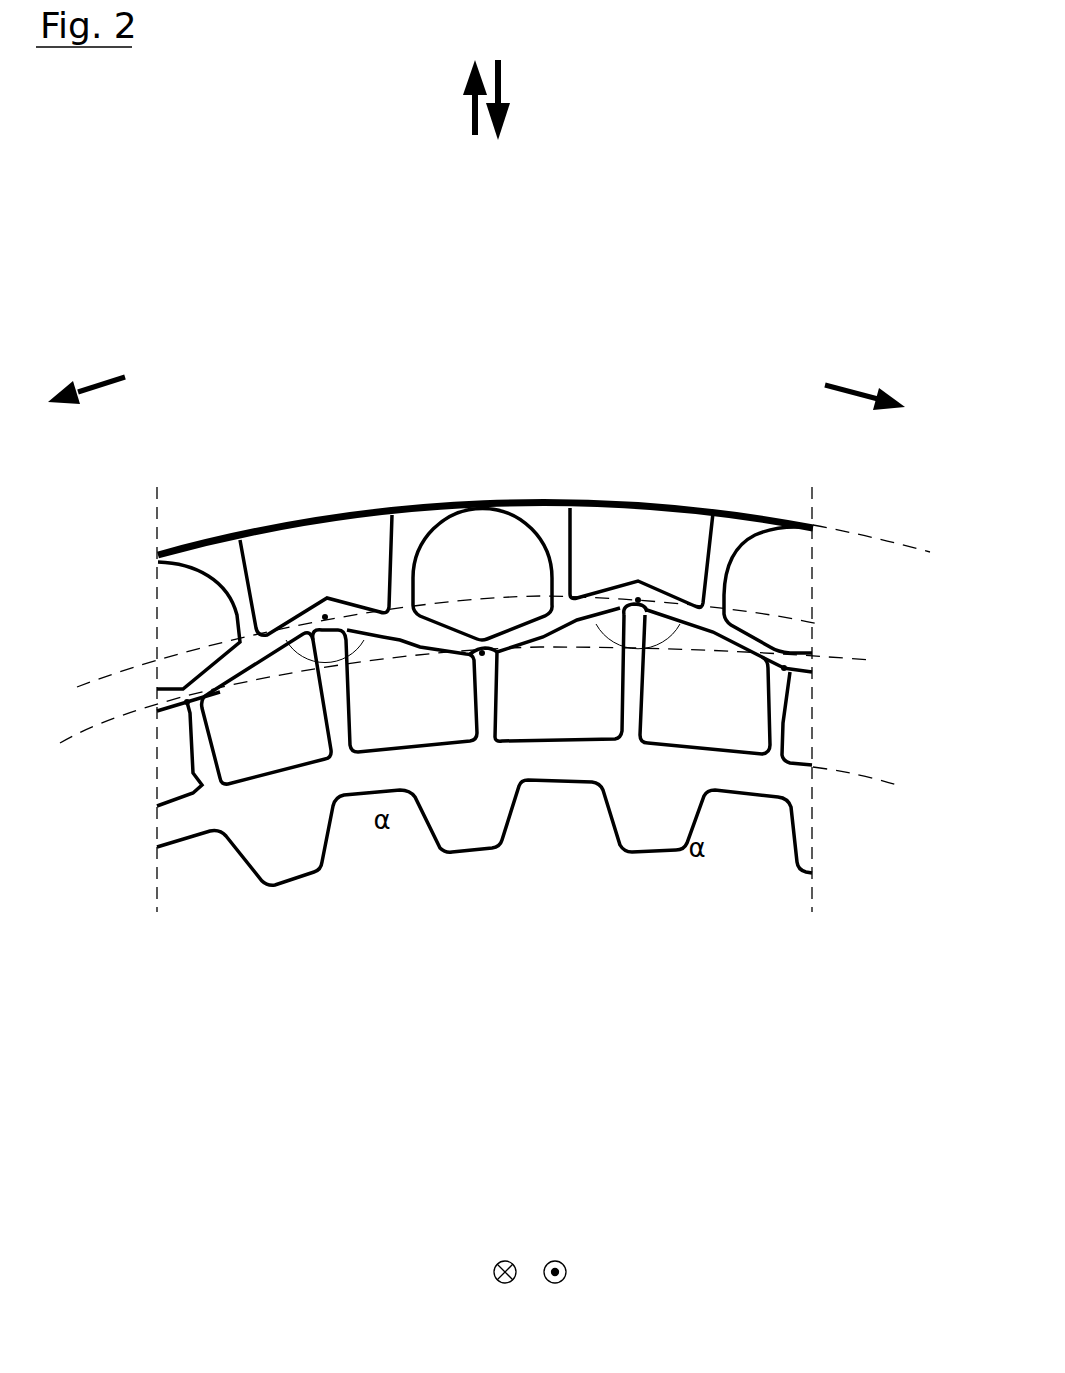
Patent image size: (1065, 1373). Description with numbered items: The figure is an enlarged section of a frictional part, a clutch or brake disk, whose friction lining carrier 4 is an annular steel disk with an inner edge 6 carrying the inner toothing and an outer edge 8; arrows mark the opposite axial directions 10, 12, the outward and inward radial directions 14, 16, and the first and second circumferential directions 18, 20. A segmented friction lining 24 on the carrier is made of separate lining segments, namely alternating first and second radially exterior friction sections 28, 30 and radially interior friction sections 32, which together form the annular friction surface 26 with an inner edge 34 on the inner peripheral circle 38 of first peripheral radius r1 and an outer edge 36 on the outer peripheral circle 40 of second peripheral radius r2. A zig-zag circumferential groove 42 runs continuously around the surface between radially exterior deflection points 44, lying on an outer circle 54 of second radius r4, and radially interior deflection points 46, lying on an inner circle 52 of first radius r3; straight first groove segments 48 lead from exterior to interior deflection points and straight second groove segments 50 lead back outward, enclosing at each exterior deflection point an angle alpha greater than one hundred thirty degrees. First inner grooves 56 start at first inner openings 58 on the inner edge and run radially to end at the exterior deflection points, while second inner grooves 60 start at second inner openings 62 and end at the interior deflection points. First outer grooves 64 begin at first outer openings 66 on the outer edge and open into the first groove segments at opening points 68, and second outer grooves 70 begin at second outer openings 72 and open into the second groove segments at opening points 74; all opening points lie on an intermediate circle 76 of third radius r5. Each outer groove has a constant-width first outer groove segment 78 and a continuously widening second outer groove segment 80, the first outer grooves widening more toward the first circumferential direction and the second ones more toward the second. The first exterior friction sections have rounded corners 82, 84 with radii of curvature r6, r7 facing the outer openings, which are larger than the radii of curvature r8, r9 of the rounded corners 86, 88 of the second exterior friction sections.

The friction lining carrier 4 is at (163, 830).
The inner edge 6 is at (175, 850).
The outer edge 8 is at (217, 540).
The axial direction 10 is at (564, 1282).
The axial direction 12 is at (496, 1282).
The radial direction 14 is at (470, 112).
The radial direction 16 is at (503, 86).
The first circumferential direction 18 is at (92, 378).
The second circumferential direction 20 is at (853, 388).
The friction lining 24 is at (160, 787).
The friction surface 26 is at (178, 773).
The first radially exterior friction section 28 is at (157, 577).
The second radially exterior friction section 30 is at (313, 517).
The radially interior friction section 32 is at (263, 767).
The inner edge 34 is at (798, 768).
The outer edge 36 is at (668, 505).
The inner peripheral circle 38 is at (890, 785).
The outer peripheral circle 40 is at (880, 540).
The circumferential groove 42 is at (755, 640).
The radially exterior deflection point 44 is at (325, 615).
The radially interior deflection point 46 is at (193, 760).
The first groove segment 48 is at (311, 765).
The second groove segment 50 is at (437, 742).
The inner circle 52 is at (73, 740).
The outer circle 54 is at (80, 687).
The first inner groove 56 is at (335, 712).
The first inner opening 58 is at (351, 762).
The second inner groove 60 is at (204, 757).
The second inner opening 62 is at (506, 768).
The first outer groove 64 is at (560, 545).
The first outer opening 66 is at (543, 503).
The opening point 68 is at (270, 737).
The second outer groove 70 is at (398, 585).
The second outer opening 72 is at (407, 503).
The opening point 74 is at (412, 650).
The intermediate circle 76 is at (872, 660).
The first outer groove segment 78 is at (397, 572).
The second outer groove segment 80 is at (399, 588).
The rounded corner 82 is at (538, 515).
The rounded corner 84 is at (417, 545).
The rounded corner 86 is at (567, 502).
The rounded corner 88 is at (393, 515).
The first peripheral radius r1 is at (903, 786).
The second peripheral radius r2 is at (910, 548).
The first radius r3 is at (112, 725).
The second radius r4 is at (62, 692).
The third radius r5 is at (878, 661).
The radius of curvature r6 is at (531, 536).
The radius of curvature r7 is at (422, 543).
The radius of curvature r8 is at (573, 512).
The radius of curvature r9 is at (381, 520).